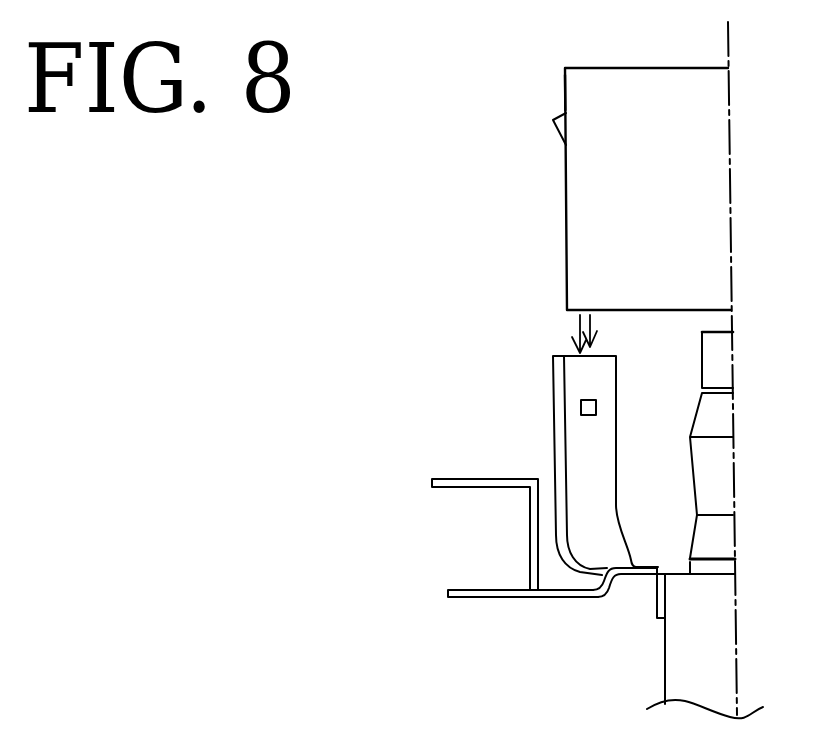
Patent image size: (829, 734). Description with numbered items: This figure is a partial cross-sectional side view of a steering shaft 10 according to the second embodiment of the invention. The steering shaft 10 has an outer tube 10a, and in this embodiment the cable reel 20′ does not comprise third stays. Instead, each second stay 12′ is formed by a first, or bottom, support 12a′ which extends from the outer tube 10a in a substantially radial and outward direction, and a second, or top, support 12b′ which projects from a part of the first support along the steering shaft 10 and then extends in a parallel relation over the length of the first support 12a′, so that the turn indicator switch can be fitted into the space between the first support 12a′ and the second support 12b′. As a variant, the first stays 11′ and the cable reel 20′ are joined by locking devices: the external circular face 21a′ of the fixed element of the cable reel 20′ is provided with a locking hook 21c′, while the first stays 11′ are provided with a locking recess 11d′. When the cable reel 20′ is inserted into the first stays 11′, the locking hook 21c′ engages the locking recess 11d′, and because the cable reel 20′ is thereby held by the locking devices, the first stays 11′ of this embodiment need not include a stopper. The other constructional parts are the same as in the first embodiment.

The steering shaft 10 is at (720, 473).
The outer tube 10a is at (665, 652).
The first stay 11′ is at (617, 480).
The locking recess 11d′ is at (588, 399).
The second stay 12′ is at (583, 599).
The first support 12a′ is at (500, 599).
The second support 12b′ is at (465, 478).
The cable reel 20′ is at (634, 68).
The external circular face 21a′ is at (566, 98).
The locking hook 21c′ is at (556, 125).